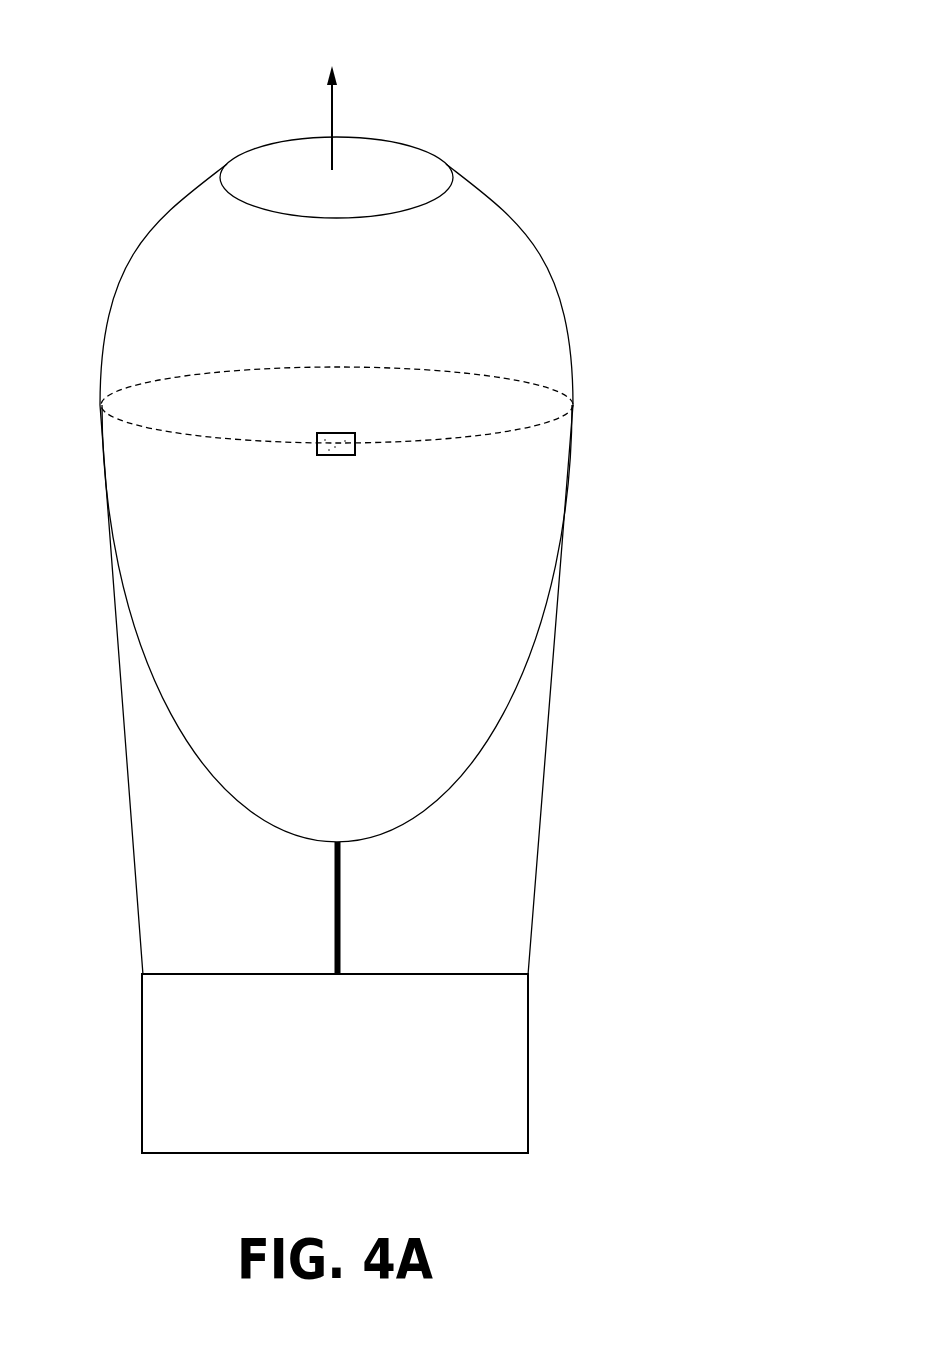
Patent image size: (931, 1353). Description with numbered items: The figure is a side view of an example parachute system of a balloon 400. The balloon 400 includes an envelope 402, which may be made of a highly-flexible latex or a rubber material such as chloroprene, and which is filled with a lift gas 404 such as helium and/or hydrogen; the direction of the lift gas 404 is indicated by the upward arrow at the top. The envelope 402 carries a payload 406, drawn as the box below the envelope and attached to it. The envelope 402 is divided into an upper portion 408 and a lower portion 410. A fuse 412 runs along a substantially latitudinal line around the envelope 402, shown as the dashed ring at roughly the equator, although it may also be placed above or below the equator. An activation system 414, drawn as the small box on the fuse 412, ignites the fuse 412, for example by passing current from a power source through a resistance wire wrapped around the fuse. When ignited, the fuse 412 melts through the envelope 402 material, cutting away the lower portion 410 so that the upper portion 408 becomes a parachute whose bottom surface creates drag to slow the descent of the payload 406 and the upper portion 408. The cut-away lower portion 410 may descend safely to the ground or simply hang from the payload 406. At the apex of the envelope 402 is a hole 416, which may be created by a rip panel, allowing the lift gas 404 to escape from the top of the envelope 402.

The balloon 400 is at (566, 68).
The envelope 402 is at (142, 233).
The lift gas 404 is at (335, 90).
The payload 406 is at (138, 1060).
The upper portion 408 is at (545, 255).
The lower portion 410 is at (442, 797).
The fuse 412 is at (405, 368).
The activation system 414 is at (358, 453).
The hole 416 is at (378, 152).